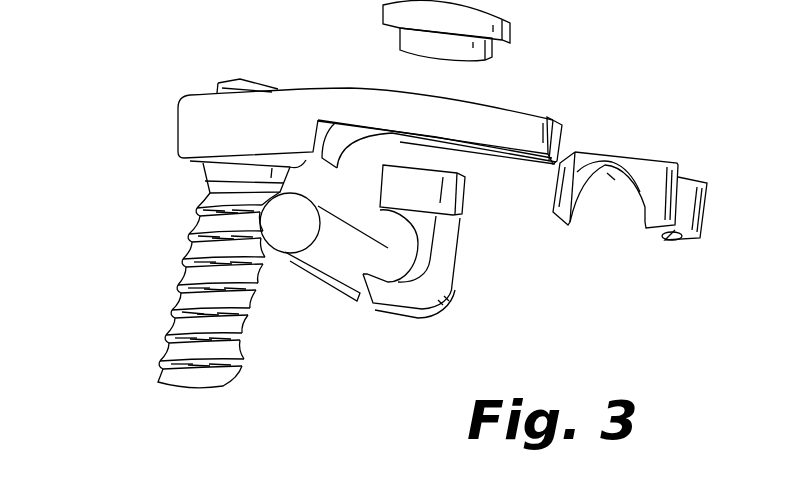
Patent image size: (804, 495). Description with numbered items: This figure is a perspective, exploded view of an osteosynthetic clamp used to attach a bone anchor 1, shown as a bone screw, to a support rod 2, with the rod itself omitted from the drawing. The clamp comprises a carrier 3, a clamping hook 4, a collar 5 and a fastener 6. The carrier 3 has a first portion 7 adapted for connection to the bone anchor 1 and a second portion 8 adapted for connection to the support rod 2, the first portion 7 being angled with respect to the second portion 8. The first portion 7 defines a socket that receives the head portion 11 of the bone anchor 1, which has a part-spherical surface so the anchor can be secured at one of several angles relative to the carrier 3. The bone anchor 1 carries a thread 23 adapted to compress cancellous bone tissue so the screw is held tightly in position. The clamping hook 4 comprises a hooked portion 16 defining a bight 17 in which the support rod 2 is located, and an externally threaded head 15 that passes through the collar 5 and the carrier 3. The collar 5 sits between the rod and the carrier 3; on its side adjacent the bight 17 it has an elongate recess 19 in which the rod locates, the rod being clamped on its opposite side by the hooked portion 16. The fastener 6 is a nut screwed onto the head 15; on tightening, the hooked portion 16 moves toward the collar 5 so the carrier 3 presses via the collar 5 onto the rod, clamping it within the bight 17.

The bone anchor 1 is at (167, 342).
The support rod 2 is at (312, 282).
The carrier 3 is at (303, 104).
The clamping hook 4 is at (413, 320).
The collar 5 is at (657, 156).
The fastener 6 is at (513, 24).
The first portion 7 is at (180, 125).
The second portion 8 is at (553, 120).
The head portion 11 is at (238, 78).
The head 15 is at (463, 197).
The hooked portion 16 is at (441, 307).
The bight 17 is at (402, 246).
The elongate recess 19 is at (610, 193).
The thread 23 is at (183, 287).